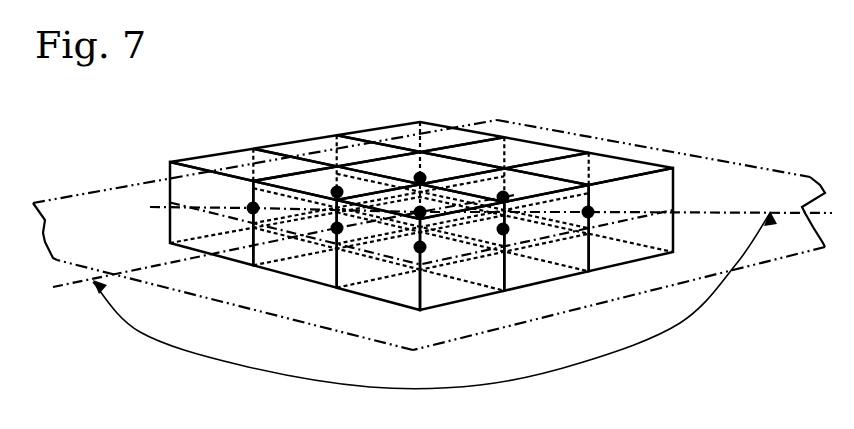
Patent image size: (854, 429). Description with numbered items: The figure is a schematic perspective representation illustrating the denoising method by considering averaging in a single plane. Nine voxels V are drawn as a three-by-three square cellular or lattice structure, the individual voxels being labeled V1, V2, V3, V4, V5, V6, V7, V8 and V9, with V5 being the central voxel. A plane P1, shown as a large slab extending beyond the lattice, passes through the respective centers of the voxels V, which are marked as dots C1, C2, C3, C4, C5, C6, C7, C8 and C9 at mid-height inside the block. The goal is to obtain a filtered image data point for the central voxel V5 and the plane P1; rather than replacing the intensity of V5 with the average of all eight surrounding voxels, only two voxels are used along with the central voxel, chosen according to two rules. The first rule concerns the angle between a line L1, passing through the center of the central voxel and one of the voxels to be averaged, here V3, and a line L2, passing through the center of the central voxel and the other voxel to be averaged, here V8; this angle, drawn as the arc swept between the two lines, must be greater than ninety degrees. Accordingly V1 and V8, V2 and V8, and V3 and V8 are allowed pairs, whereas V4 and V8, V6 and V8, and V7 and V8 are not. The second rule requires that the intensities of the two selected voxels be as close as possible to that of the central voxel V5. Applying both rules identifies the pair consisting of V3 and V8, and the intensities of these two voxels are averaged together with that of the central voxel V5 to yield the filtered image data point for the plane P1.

The voxels V is at (672, 85).
The voxel V1 is at (393, 137).
The voxel V2 is at (550, 150).
The voxel V3 is at (635, 170).
The voxel V4 is at (287, 150).
The central voxel V5 is at (457, 167).
The voxel V6 is at (567, 253).
The voxel V7 is at (185, 193).
The voxel V8 is at (300, 245).
The voxel V9 is at (465, 268).
The center of voxel C1 is at (420, 178).
The center of voxel C2 is at (505, 197).
The center of voxel C3 is at (587, 212).
The center of voxel C4 is at (337, 192).
The center of voxel C5 is at (420, 212).
The center of voxel C6 is at (503, 229).
The center of voxel C7 is at (253, 210).
The center of voxel C8 is at (337, 230).
The center of voxel C9 is at (420, 248).
The plane P1 is at (755, 165).
The line L1 is at (713, 213).
The line L2 is at (62, 288).